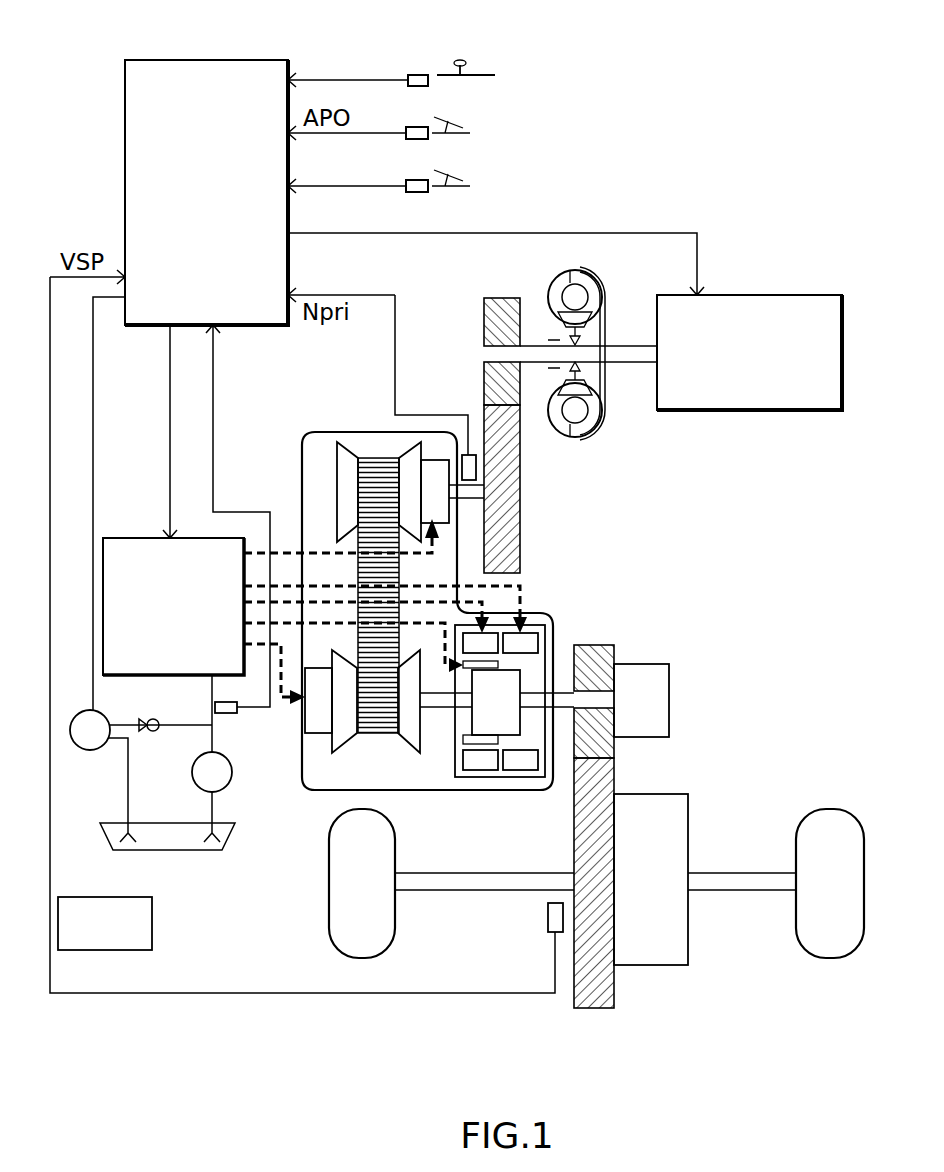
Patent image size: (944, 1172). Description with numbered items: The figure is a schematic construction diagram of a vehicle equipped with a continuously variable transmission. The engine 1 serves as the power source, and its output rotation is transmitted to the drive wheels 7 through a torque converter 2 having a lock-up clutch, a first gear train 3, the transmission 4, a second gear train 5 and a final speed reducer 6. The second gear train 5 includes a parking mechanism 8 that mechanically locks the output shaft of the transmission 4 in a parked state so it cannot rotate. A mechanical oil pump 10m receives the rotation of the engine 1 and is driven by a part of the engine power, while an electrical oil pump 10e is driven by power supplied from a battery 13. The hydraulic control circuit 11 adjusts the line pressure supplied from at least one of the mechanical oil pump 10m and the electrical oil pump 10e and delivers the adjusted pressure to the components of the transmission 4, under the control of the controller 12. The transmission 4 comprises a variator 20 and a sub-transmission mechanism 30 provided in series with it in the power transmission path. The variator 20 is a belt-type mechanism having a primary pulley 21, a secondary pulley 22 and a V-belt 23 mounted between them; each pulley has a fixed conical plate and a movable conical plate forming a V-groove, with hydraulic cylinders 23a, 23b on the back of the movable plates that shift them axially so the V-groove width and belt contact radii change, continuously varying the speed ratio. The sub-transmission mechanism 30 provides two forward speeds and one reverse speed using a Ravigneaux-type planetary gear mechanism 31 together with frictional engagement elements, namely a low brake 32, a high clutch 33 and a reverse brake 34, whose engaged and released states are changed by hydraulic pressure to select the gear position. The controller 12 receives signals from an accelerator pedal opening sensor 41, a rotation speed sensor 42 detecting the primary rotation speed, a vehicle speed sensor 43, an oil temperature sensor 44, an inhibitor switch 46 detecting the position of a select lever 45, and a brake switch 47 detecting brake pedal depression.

The engine 1 is at (825, 300).
The torque converter 2 is at (605, 305).
The first gear train 3 is at (511, 283).
The transmission 4 is at (348, 432).
The second gear train 5 is at (602, 1021).
The final speed reducer 6 is at (650, 955).
The drive wheels 7 is at (360, 942).
The parking mechanism 8 is at (668, 692).
The electrical oil pump 10e is at (102, 712).
The mechanical oil pump 10m is at (196, 787).
The hydraulic control circuit 11 is at (128, 541).
The controller 12 is at (243, 62).
The battery 13 is at (152, 904).
The variator 20 is at (369, 581).
The primary pulley 21 is at (350, 490).
The secondary pulley 22 is at (340, 720).
The V-belt 23 is at (380, 458).
The hydraulic cylinder 23a is at (432, 470).
The hydraulic cylinder 23b is at (318, 722).
The sub-transmission mechanism 30 is at (525, 664).
The Ravigneaux-type planetary gear mechanism 31 is at (500, 700).
The low brake 32 is at (485, 645).
The high clutch 33 is at (480, 739).
The reverse brake 34 is at (520, 645).
The accelerator pedal opening sensor 41 is at (414, 134).
The rotation speed sensor 42 is at (468, 470).
The vehicle speed sensor 43 is at (548, 915).
The oil temperature sensor 44 is at (226, 707).
The select lever 45 is at (468, 72).
The inhibitor switch 46 is at (418, 75).
The brake switch 47 is at (414, 187).